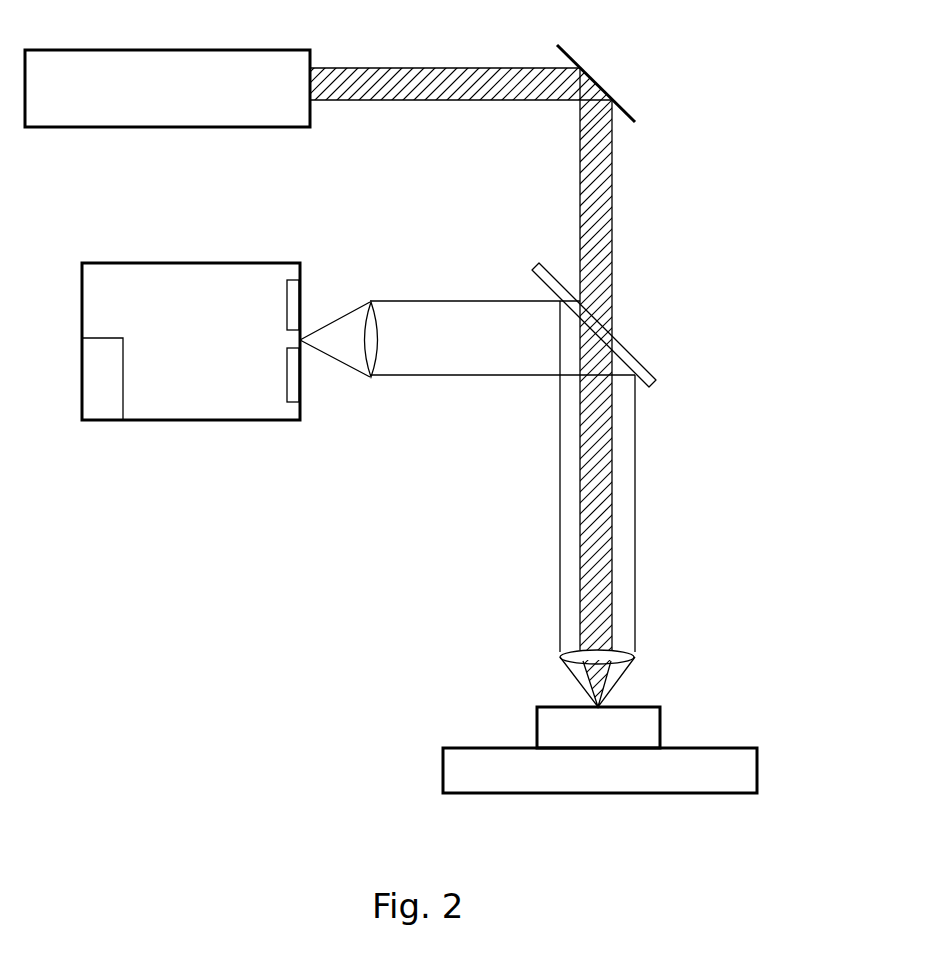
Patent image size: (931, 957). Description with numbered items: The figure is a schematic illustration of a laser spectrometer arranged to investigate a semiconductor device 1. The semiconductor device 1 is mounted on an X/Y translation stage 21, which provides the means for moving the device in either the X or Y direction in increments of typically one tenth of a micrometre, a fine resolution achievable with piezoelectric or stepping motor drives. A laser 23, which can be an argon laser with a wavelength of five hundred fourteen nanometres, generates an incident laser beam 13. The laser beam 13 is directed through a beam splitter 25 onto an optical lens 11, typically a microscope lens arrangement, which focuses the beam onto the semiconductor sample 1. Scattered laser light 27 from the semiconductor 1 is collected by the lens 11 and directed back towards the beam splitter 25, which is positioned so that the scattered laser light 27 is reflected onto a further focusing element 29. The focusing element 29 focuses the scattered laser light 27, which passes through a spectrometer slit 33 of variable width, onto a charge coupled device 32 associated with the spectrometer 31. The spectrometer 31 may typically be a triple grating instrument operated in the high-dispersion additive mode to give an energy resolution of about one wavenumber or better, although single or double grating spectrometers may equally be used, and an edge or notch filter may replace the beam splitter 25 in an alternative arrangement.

The semiconductor device 1 is at (714, 710).
The optical lens 11 is at (617, 658).
The incident laser beam 13 is at (612, 228).
The X/Y translation stage 21 is at (750, 768).
The laser 23 is at (112, 113).
The beam splitter 25 is at (627, 357).
The scattered laser light 27 is at (565, 530).
The focusing element 29 is at (372, 357).
The spectrometer 31 is at (180, 407).
The charge coupled device 32 is at (88, 372).
The spectrometer slit 33 is at (297, 287).